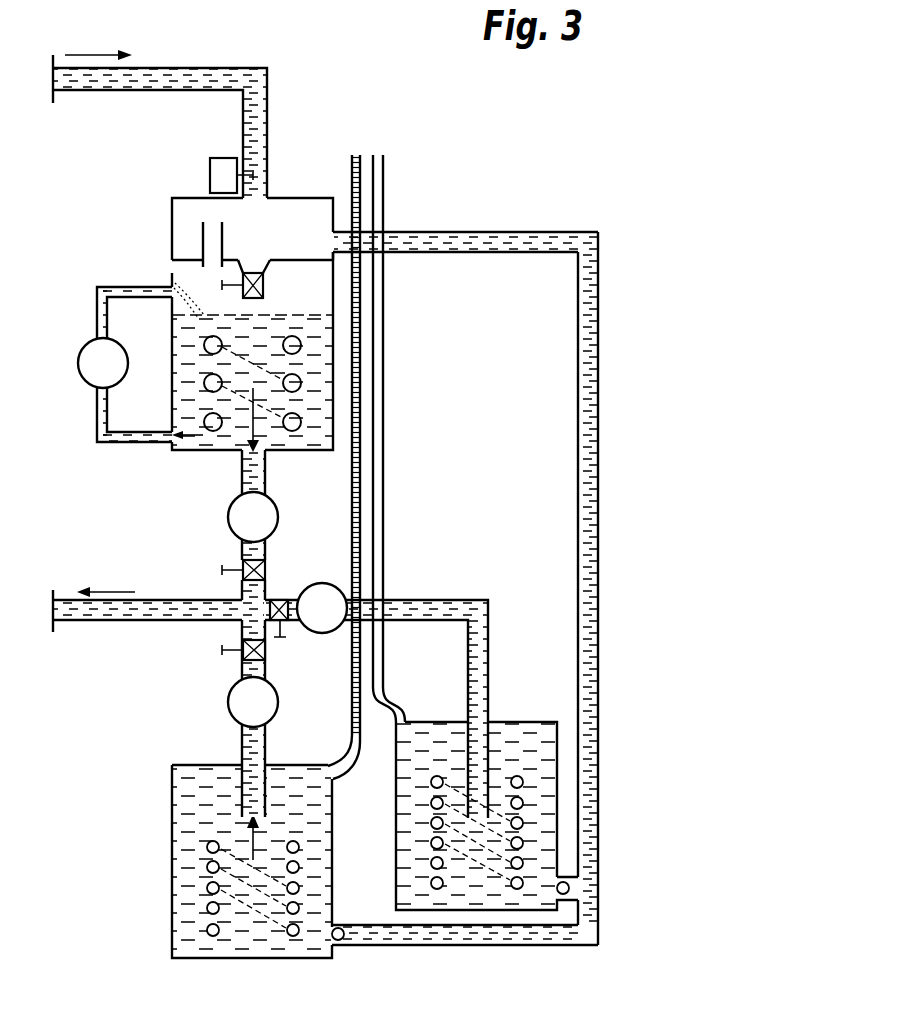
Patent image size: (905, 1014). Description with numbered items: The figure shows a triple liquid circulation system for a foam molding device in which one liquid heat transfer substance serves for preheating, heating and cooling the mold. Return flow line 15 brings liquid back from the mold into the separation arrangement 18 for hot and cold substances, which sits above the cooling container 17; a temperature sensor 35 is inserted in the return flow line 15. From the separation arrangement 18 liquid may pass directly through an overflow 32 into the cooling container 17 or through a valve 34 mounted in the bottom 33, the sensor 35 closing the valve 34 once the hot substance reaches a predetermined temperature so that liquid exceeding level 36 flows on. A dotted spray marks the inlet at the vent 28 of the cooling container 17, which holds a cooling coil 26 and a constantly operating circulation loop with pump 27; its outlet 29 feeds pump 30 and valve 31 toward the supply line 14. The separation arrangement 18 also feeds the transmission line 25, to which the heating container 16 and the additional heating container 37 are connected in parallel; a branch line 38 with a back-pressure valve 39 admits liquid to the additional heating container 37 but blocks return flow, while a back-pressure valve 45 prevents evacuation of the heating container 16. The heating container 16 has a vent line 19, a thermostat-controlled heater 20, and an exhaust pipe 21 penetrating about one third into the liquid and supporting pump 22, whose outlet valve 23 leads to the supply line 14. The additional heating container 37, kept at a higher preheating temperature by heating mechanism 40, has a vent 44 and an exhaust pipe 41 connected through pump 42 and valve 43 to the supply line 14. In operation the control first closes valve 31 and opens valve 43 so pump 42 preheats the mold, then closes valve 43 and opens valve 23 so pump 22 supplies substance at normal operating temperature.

The supply line 14 is at (100, 613).
The return flow line 15 is at (128, 78).
The heating container 16 is at (518, 730).
The cooling container 17 is at (208, 450).
The separation arrangement 18 is at (182, 212).
The vent line 19 is at (380, 492).
The heater 20 is at (522, 845).
The exhaust pipe 21 is at (456, 604).
The pump 22 is at (326, 630).
The valve 23 is at (285, 622).
The transmission line 25 is at (578, 366).
The cooling coil 26 is at (205, 420).
The pump 27 is at (82, 353).
The vent 28 is at (183, 268).
The outlet 29 is at (265, 456).
The pump 30 is at (262, 523).
The valve 31 is at (266, 570).
The overflow 32 is at (207, 236).
The bottom 33 is at (276, 258).
The valve 34 is at (265, 286).
The temperature sensor 35 is at (213, 170).
The level 36 is at (322, 246).
The additional heating container 37 is at (175, 928).
The branch line 38 is at (518, 938).
The back-pressure valve 39 is at (340, 943).
The heating mechanism 40 is at (238, 888).
The exhaust pipe 41 is at (243, 750).
The pump 42 is at (238, 704).
The valve 43 is at (245, 653).
The vent 44 is at (352, 722).
The back-pressure valve 45 is at (570, 893).